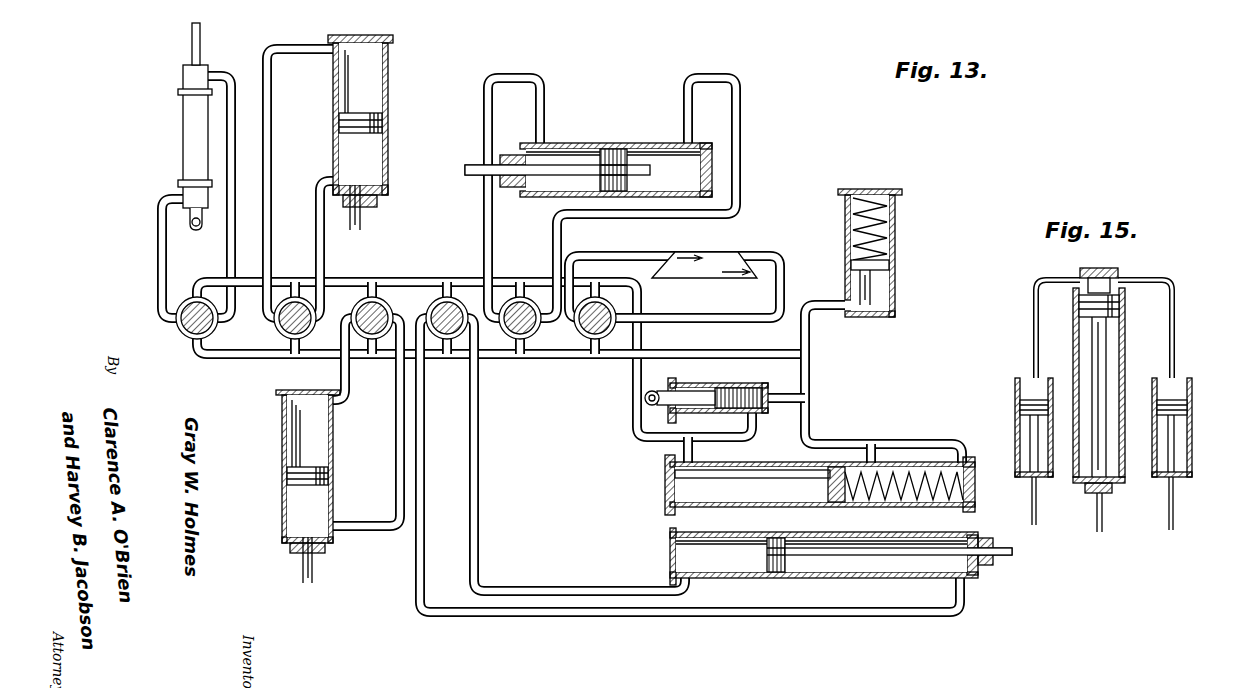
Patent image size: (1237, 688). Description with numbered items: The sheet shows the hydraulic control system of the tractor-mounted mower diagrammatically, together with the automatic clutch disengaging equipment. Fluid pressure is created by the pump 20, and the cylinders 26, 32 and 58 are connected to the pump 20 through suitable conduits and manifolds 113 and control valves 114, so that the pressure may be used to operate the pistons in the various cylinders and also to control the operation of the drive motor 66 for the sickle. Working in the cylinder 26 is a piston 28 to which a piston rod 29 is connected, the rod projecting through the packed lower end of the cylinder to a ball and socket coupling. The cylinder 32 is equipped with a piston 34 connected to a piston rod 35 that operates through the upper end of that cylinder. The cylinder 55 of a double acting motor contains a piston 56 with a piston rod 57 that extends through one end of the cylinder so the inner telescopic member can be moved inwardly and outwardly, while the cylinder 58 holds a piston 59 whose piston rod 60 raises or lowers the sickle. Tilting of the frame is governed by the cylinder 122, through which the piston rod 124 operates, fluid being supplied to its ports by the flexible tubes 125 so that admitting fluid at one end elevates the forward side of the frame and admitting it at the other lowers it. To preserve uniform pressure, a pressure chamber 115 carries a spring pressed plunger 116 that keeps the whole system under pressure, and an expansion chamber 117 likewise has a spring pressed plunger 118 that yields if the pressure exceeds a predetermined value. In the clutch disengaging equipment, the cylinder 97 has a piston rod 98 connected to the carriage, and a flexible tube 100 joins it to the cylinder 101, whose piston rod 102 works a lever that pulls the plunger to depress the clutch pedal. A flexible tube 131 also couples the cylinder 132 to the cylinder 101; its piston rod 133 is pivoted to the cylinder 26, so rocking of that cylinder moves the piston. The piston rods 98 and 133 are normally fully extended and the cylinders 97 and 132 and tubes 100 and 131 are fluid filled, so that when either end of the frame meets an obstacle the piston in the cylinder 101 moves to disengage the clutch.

In FIG. 13, the pump 20 is at (750, 385).
In FIG. 13, the cylinder 26 is at (290, 471).
In FIG. 13, the piston 28 is at (284, 480).
In FIG. 13, the piston rod 29 is at (318, 558).
In FIG. 13, the cylinder 32 is at (377, 121).
In FIG. 13, the piston 34 is at (376, 120).
In FIG. 13, the piston rod 35 is at (365, 210).
In FIG. 13, the cylinder 55 is at (841, 584).
In FIG. 13, the piston 56 is at (765, 553).
In FIG. 13, the piston rod 57 is at (1003, 560).
In FIG. 13, the cylinder 58 is at (588, 152).
In FIG. 13, the piston 59 is at (617, 157).
In FIG. 13, the piston rod 60 is at (556, 165).
In FIG. 13, the drive motor 66 is at (745, 262).
In FIG. 15, the cylinder 97 is at (1015, 410).
In FIG. 15, the piston rod 98 is at (1038, 510).
In FIG. 15, the flexible tube 100 is at (1035, 325).
In FIG. 15, the cylinder 101 is at (1125, 345).
In FIG. 15, the piston rod 102 is at (1103, 515).
In FIG. 13, the conduits and manifolds 113 is at (503, 280).
In FIG. 13, the control valves 114 is at (440, 300).
In FIG. 13, the pressure chamber 115 is at (820, 473).
In FIG. 13, the spring pressed plunger 116 is at (808, 482).
In FIG. 13, the expansion chamber 117 is at (897, 288).
In FIG. 13, the spring pressed plunger 118 is at (895, 253).
In FIG. 13, the cylinder 122 is at (185, 140).
In FIG. 13, the piston rod 124 is at (192, 47).
In FIG. 13, the flexible tubes 125 is at (229, 73).
In FIG. 15, the flexible tube 131 is at (1174, 315).
In FIG. 15, the cylinder 132 is at (1190, 400).
In FIG. 15, the piston rod 133 is at (1175, 512).